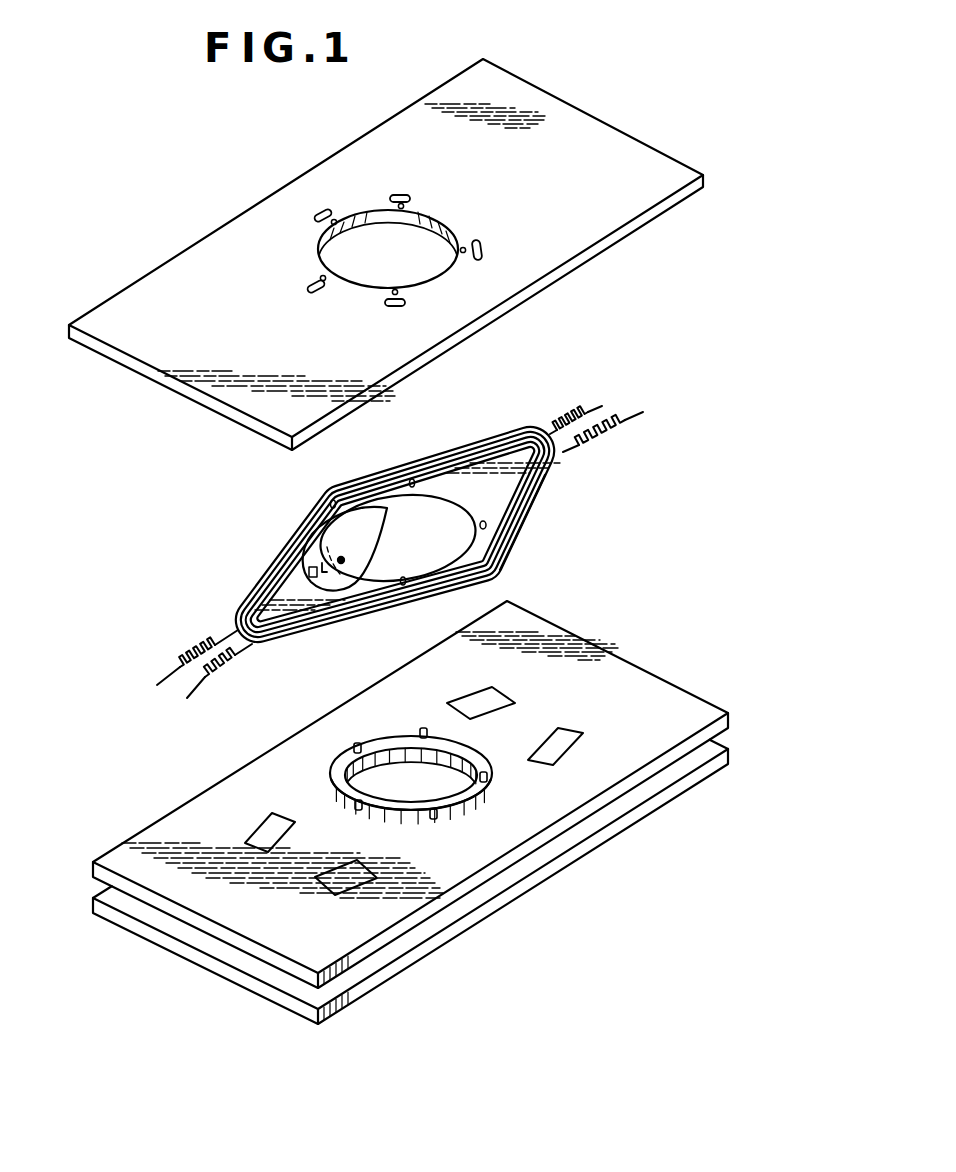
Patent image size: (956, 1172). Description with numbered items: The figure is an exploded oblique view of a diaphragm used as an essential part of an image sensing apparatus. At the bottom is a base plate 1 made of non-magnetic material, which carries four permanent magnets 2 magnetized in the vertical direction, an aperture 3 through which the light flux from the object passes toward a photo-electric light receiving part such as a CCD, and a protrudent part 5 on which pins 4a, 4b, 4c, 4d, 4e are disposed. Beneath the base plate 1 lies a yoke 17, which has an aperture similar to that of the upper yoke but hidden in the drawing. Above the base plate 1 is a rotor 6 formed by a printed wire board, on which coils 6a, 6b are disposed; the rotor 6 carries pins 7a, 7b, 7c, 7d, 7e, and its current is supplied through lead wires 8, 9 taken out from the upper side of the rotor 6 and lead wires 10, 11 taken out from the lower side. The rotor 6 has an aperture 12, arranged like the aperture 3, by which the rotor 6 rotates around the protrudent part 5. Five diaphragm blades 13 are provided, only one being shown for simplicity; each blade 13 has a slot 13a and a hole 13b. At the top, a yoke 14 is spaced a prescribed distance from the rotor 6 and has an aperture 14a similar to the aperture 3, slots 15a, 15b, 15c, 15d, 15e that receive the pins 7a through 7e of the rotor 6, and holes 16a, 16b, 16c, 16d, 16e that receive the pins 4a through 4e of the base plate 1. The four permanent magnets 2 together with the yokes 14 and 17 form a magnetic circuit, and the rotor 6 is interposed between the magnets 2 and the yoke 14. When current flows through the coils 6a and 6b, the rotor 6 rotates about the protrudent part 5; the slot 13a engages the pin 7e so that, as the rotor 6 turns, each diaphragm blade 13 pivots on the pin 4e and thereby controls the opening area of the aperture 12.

The base plate 1 is at (677, 692).
The permanent magnets 2 is at (514, 698).
The aperture 3 is at (410, 785).
The pin 4a is at (353, 749).
The pin 4b is at (424, 728).
The pin 4c is at (488, 778).
The pin 4d is at (437, 816).
The pin 4e is at (359, 811).
The protrudent part 5 is at (387, 742).
The rotor 6 is at (506, 458).
The coil 6a is at (508, 540).
The coil 6b is at (496, 572).
The pin 7a is at (334, 500).
The pin 7b is at (412, 479).
The pin 7c is at (487, 525).
The pin 7d is at (403, 586).
The pin 7e is at (326, 578).
The lead wire 8 is at (190, 696).
The lead wire 9 is at (598, 408).
The lead wire 10 is at (160, 680).
The lead wire 11 is at (637, 420).
The aperture 12 is at (448, 506).
The diaphragm blade 13 is at (350, 531).
The slot 13a is at (305, 581).
The hole 13b is at (346, 561).
The yoke 14 is at (630, 142).
The aperture 14a is at (440, 218).
The slot 15a is at (321, 210).
The slot 15b is at (399, 194).
The slot 15c is at (484, 249).
The slot 15d is at (395, 307).
The slot 15e is at (313, 291).
The hole 16a is at (334, 218).
The hole 16b is at (404, 205).
The hole 16c is at (463, 254).
The hole 16d is at (390, 294).
The hole 16e is at (319, 276).
The yoke 17 is at (690, 765).